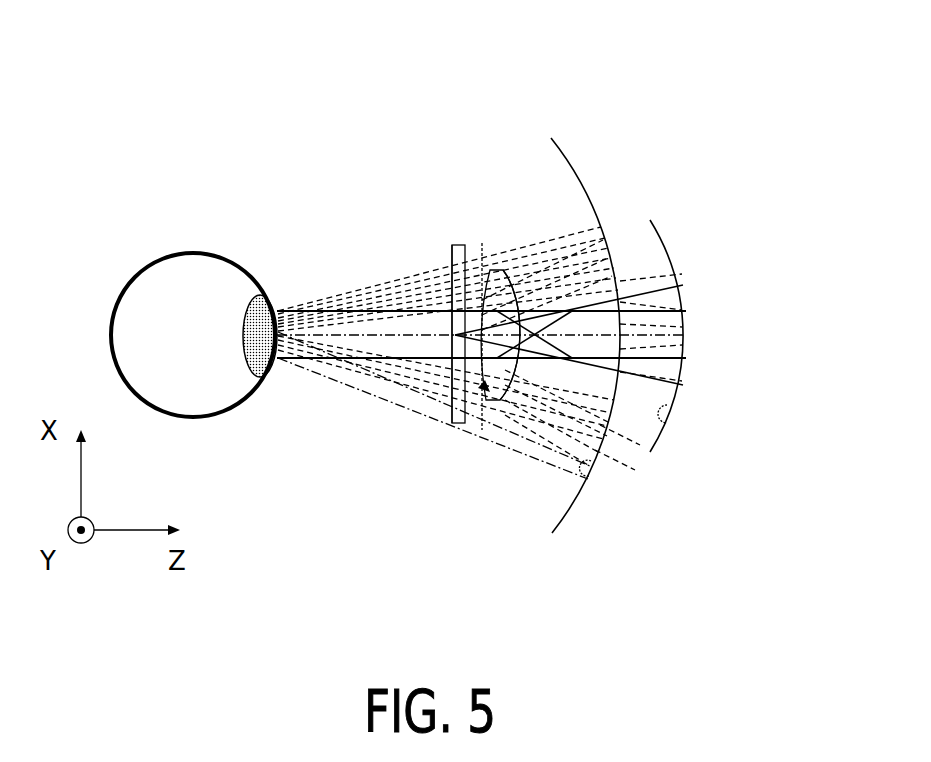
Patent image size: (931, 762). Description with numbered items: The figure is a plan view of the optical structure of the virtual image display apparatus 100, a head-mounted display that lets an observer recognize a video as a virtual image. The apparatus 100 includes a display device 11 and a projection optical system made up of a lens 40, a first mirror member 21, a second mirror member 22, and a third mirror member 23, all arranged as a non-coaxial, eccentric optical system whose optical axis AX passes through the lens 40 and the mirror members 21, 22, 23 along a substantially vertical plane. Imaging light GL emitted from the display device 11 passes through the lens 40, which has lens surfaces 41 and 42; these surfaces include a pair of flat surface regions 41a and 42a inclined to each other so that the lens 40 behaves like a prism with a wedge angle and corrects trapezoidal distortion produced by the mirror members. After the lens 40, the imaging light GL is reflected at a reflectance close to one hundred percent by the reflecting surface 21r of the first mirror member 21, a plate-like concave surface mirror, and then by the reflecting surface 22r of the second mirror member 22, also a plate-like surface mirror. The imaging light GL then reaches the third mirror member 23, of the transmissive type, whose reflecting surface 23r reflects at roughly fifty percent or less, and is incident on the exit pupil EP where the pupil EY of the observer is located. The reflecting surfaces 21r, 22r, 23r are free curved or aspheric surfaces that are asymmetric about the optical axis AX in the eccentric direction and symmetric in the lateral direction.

The virtual image display apparatus 100 is at (338, 133).
The display device 11 is at (445, 240).
The lens 40 is at (500, 247).
The lens surface 41 is at (471, 247).
The flat surface region 41a is at (430, 282).
The lens surface 42 is at (517, 247).
The flat surface region 42a is at (560, 250).
The first mirror member 21 is at (665, 248).
The reflecting surface 21r is at (660, 428).
The second mirror member 22 is at (492, 415).
The reflecting surface 22r is at (485, 380).
The third mirror member 23 is at (565, 515).
The reflecting surface 23r is at (590, 478).
The pupil EY is at (255, 300).
The exit pupil EP is at (270, 378).
The optical axis AX is at (305, 372).
The imaging light GL is at (316, 300).